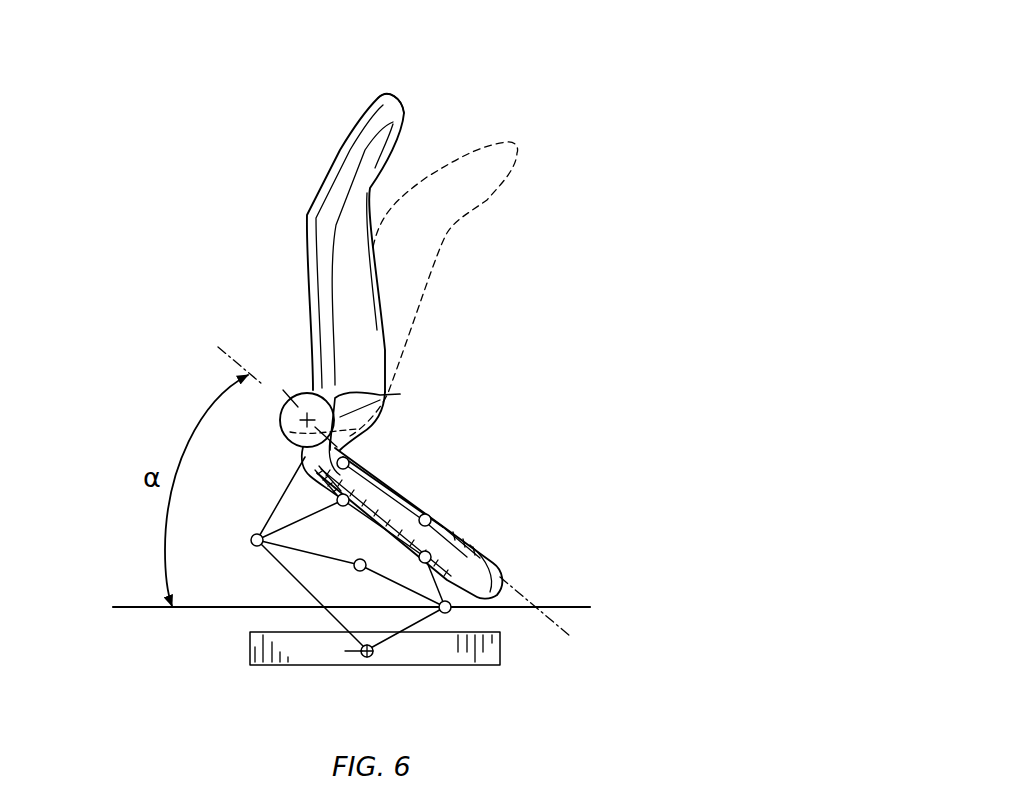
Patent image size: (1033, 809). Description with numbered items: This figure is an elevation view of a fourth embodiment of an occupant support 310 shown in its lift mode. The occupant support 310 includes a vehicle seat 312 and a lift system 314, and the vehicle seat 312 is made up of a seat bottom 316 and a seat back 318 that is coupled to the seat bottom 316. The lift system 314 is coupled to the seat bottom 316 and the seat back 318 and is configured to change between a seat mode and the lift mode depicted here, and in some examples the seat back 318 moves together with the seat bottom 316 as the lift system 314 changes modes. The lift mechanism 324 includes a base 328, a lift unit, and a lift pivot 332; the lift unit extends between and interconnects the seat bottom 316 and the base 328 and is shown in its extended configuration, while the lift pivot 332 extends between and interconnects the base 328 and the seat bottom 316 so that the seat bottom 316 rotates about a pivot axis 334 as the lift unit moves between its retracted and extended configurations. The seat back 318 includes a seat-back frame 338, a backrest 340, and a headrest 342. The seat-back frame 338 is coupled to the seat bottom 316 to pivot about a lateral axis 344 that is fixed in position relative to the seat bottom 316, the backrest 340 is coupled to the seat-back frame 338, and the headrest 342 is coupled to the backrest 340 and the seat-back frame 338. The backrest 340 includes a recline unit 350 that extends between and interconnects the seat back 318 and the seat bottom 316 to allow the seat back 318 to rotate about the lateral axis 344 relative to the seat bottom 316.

The occupant support 310 is at (718, 392).
The vehicle seat 312 is at (557, 168).
The lift system 314 is at (678, 493).
The seat bottom 316 is at (450, 503).
The seat back 318 is at (313, 277).
The lift mechanism 324 is at (482, 698).
The base 328 is at (502, 652).
The lift pivot 332 is at (369, 657).
The pivot axis 334 is at (362, 651).
The seat-back frame 338 is at (306, 217).
The backrest 340 is at (400, 394).
The headrest 342 is at (400, 140).
The lateral axis 344 is at (290, 432).
The recline unit 350 is at (283, 415).